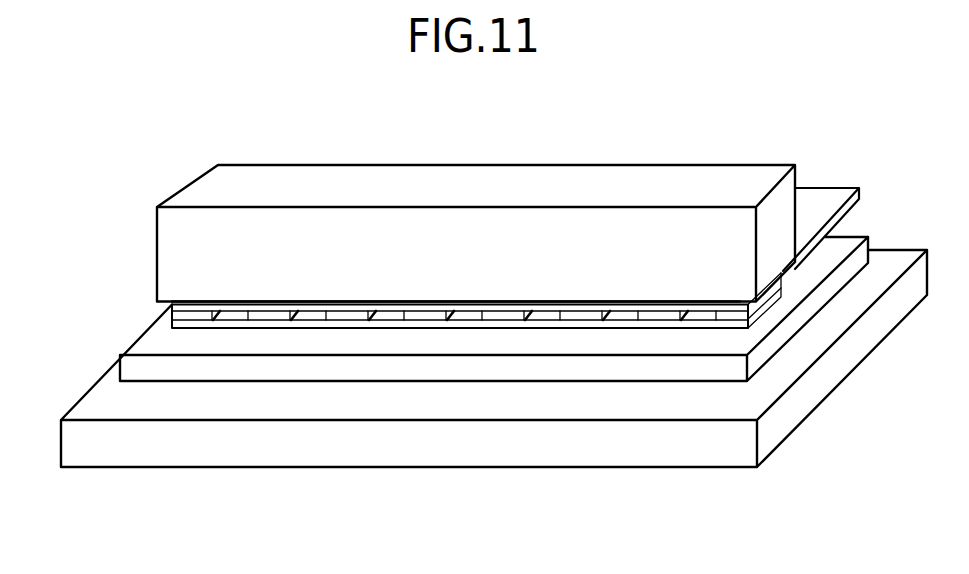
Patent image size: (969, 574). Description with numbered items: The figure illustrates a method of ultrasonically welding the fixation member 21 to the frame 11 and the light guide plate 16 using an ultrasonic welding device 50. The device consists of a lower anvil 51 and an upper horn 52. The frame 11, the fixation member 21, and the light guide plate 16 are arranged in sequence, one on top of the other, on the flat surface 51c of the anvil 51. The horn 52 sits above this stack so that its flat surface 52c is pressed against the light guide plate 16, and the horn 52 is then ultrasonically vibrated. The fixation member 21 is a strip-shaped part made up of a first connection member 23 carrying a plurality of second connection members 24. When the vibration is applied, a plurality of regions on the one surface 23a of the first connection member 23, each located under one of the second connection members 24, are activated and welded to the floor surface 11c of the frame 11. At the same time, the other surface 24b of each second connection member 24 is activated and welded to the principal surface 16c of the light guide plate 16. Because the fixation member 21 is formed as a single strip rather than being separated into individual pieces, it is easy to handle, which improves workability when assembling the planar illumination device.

The frame 11 is at (872, 220).
The floor surface 11c is at (277, 343).
The light guide plate 16 is at (854, 169).
The principal surface 16c is at (812, 247).
The fixation member 21 is at (898, 450).
The first connection member 23 is at (758, 308).
The one surface 23a is at (680, 333).
The second connection member 24 is at (775, 306).
The other surface 24b is at (427, 312).
The ultrasonic welding device 50 is at (58, 247).
The anvil 51 is at (91, 370).
The flat surface 51c is at (532, 407).
The horn 52 is at (142, 250).
The flat surface 52c is at (582, 304).